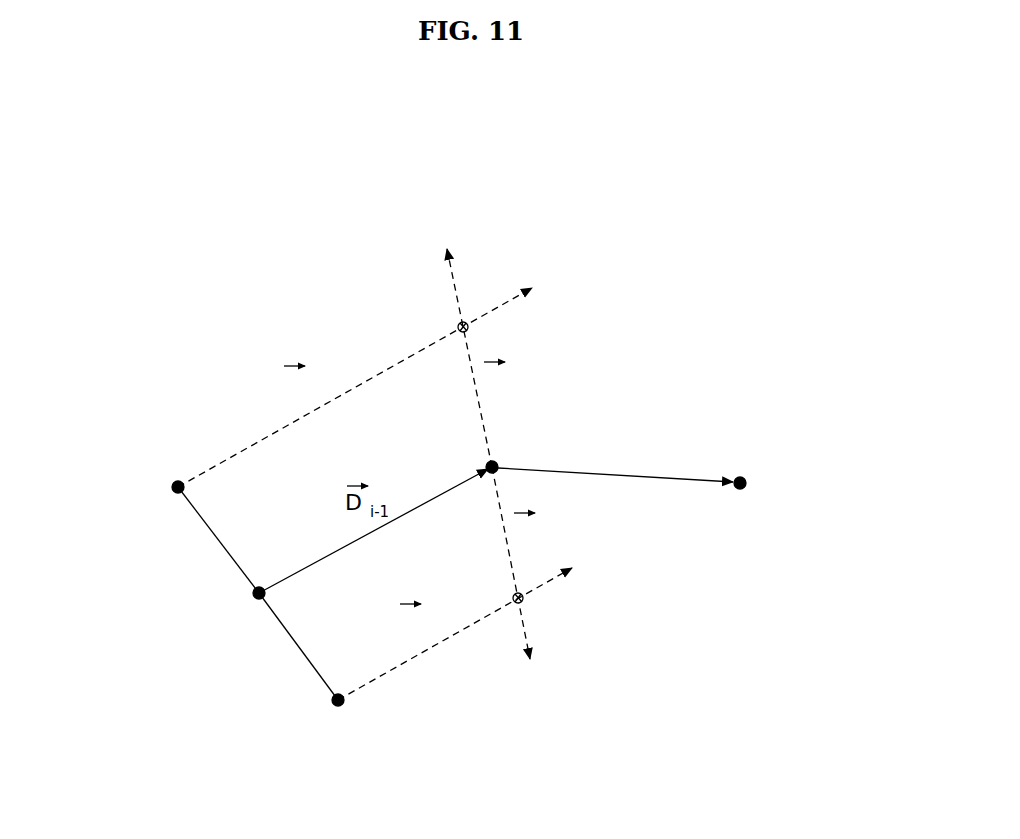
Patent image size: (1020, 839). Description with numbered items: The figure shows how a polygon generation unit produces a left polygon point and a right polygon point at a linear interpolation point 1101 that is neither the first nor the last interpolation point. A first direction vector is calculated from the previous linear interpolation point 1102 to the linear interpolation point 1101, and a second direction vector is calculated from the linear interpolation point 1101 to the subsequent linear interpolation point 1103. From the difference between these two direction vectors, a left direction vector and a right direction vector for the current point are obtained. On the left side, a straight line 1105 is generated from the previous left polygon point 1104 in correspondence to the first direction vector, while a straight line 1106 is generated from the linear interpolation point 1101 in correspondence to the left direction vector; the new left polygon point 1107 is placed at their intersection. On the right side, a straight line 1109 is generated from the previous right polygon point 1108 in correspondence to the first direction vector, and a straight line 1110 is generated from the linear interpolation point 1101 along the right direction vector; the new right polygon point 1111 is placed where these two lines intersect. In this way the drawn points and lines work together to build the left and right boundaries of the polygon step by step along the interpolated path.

The linear interpolation point P_Gi 1101 is at (498, 471).
The previous linear interpolation point P_Gi-1 1102 is at (253, 591).
The subsequent linear interpolation point P_Gi+1 1103 is at (745, 478).
The left polygon point N_Li-1 1104 is at (172, 487).
The straight line 1105 is at (278, 432).
The straight line 1106 is at (483, 415).
The left polygon point N_Li 1107 is at (464, 322).
The right polygon point N_Ri-1 1108 is at (343, 702).
The straight line 1109 is at (428, 650).
The straight line 1110 is at (513, 565).
The right polygon point N_Ri 1111 is at (525, 597).